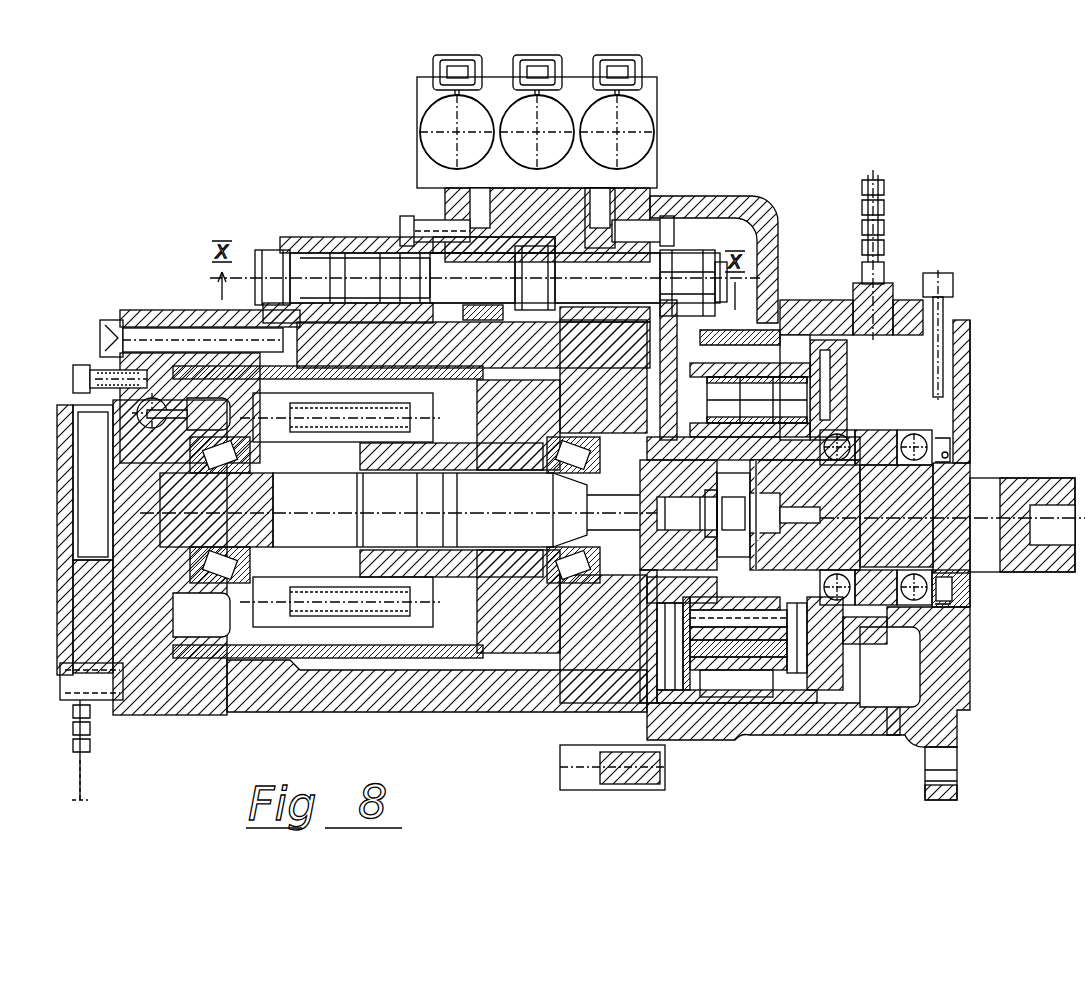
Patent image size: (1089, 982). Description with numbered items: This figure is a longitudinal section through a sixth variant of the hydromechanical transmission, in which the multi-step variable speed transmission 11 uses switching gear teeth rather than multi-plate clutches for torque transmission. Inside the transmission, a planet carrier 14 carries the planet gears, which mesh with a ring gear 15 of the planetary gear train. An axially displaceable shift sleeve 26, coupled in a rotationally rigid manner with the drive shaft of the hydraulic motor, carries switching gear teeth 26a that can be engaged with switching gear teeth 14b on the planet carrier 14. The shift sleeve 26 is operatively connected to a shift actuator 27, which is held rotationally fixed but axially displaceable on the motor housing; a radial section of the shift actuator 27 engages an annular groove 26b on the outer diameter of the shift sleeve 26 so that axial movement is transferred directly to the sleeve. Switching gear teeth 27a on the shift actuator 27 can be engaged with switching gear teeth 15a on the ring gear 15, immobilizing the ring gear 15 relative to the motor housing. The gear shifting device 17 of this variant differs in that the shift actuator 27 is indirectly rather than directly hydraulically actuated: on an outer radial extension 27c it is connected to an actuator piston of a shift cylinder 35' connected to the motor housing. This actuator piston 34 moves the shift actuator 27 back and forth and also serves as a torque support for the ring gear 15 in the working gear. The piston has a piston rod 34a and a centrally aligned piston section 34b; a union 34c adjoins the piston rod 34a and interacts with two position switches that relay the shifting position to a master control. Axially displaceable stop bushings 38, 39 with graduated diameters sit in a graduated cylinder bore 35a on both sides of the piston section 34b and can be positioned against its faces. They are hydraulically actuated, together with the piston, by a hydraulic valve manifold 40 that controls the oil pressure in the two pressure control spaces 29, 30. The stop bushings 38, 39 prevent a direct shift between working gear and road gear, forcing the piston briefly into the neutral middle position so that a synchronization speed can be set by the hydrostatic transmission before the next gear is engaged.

The multi-step variable speed transmission 11 is at (797, 262).
The planet carrier 14 is at (762, 605).
The switching gear teeth 14b is at (682, 597).
The ring gear 15 is at (772, 346).
The switching gear teeth 15a is at (742, 337).
The gear shifting device 17 is at (716, 224).
The shift sleeve 26 is at (707, 580).
The switching gear teeth 26a is at (705, 455).
The annular groove 26b is at (812, 492).
The shift actuator 27 is at (690, 338).
The switching gear teeth 27a is at (758, 335).
The outer radial extension 27c is at (686, 250).
The pressure control space 29 is at (468, 320).
The pressure control space 30 is at (604, 320).
The actuator piston 34 is at (658, 243).
The piston rod 34a is at (450, 281).
The piston section 34b is at (545, 270).
The union 34c is at (322, 248).
The shift cylinder 35' is at (498, 203).
The graduated cylinder bore 35a is at (530, 300).
The stop bushing 38 is at (517, 227).
The stop bushing 39 is at (600, 226).
The hydraulic valve manifold 40 is at (410, 105).